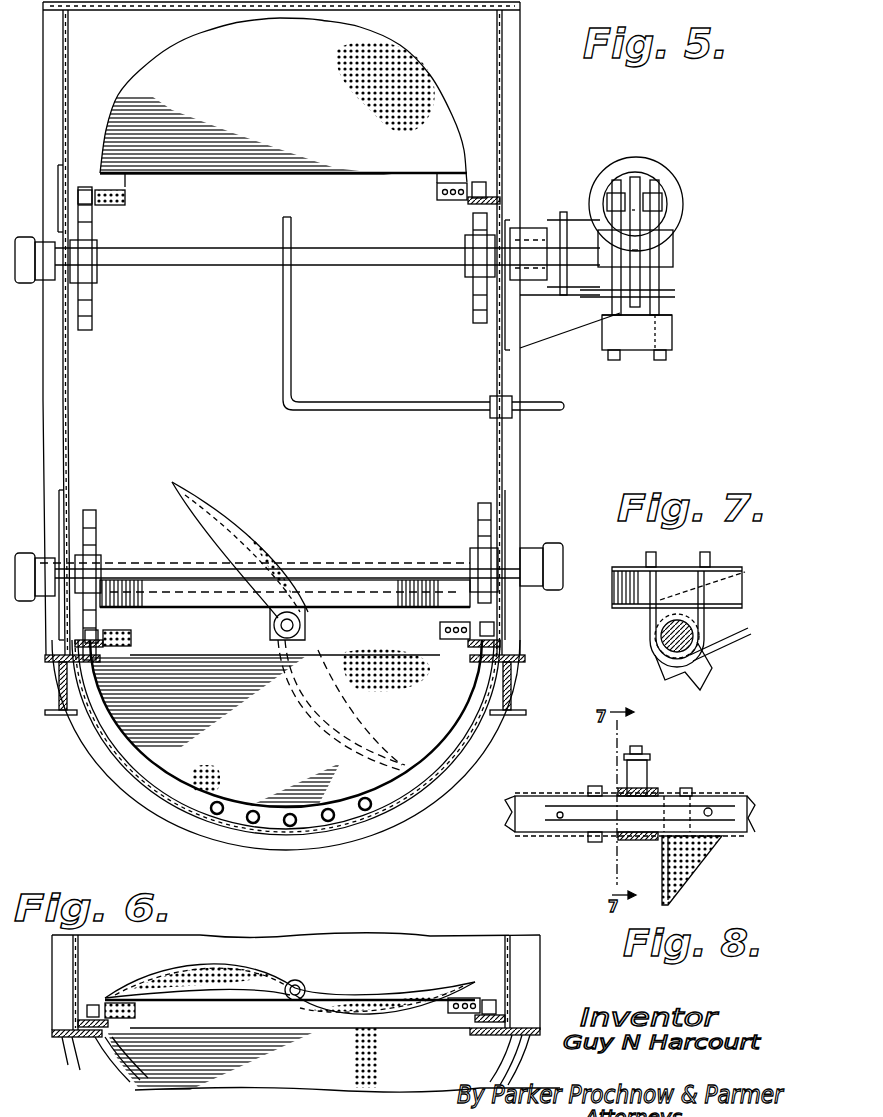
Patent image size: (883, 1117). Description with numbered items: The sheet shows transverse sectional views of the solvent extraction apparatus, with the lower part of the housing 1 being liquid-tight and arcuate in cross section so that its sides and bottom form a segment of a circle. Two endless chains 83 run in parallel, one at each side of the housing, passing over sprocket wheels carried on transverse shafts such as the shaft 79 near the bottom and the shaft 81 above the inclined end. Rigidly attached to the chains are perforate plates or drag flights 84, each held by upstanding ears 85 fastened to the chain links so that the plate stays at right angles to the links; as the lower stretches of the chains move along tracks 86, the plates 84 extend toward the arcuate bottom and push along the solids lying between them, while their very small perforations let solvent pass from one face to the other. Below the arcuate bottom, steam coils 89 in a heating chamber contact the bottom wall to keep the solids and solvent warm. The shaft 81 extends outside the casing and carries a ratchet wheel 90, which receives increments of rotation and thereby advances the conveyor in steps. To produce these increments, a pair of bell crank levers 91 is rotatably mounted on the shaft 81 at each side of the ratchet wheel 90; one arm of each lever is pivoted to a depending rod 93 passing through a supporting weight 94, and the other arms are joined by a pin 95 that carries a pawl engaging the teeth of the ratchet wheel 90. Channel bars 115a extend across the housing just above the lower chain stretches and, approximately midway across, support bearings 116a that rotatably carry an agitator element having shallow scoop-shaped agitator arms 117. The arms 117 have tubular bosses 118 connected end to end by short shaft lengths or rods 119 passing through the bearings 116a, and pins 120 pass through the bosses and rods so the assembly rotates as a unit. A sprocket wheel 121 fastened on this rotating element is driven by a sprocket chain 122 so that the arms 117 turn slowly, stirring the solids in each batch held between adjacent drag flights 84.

In FIG. 5, the housing 1 is at (502, 100).
In FIG. 5, the perforate plates or drag flights 84 is at (281, 412).
In FIG. 6, the perforate plates or drag flights 84 is at (332, 1046).
In FIG. 5, the upstanding ears 85 is at (125, 182).
In FIG. 6, the upstanding ears 85 is at (138, 1022).
In FIG. 5, the endless chains 83 is at (483, 183).
In FIG. 6, the endless chains 83 is at (87, 1010).
In FIG. 5, the tracks 86 is at (495, 200).
In FIG. 6, the tracks 86 is at (510, 1012).
In FIG. 5, the shaft 81 is at (380, 266).
In FIG. 5, the pin 95 is at (662, 194).
In FIG. 5, the bell crank levers 91 is at (668, 205).
In FIG. 5, the ratchet wheel 90 is at (672, 252).
In FIG. 5, the rod 93 is at (660, 314).
In FIG. 5, the supporting weight 94 is at (637, 337).
In FIG. 5, the shaft 79 is at (298, 572).
In FIG. 5, the channel bars 115a is at (362, 588).
In FIG. 7, the channel bars 115a is at (628, 567).
In FIG. 8, the channel bars 115a is at (650, 768).
In FIG. 5, the agitator arms 117 is at (212, 522).
In FIG. 8, the agitator arms 117 is at (690, 870).
In FIG. 6, the agitator arms 117 is at (175, 976).
In FIG. 5, the short shaft lengths or rods 119 is at (272, 626).
In FIG. 7, the short shaft lengths or rods 119 is at (660, 650).
In FIG. 8, the short shaft lengths or rods 119 is at (692, 796).
In FIG. 6, the short shaft lengths or rods 119 is at (305, 988).
In FIG. 5, the bearings 116a is at (308, 625).
In FIG. 7, the bearings 116a is at (650, 643).
In FIG. 8, the bearings 116a is at (648, 840).
In FIG. 5, the steam coils 89 is at (288, 828).
In FIG. 7, the sprocket wheel 121 is at (712, 624).
In FIG. 7, the sprocket chain 122 is at (728, 648).
In FIG. 8, the tubular bosses 118 is at (522, 805).
In FIG. 8, the pins 120 is at (722, 795).